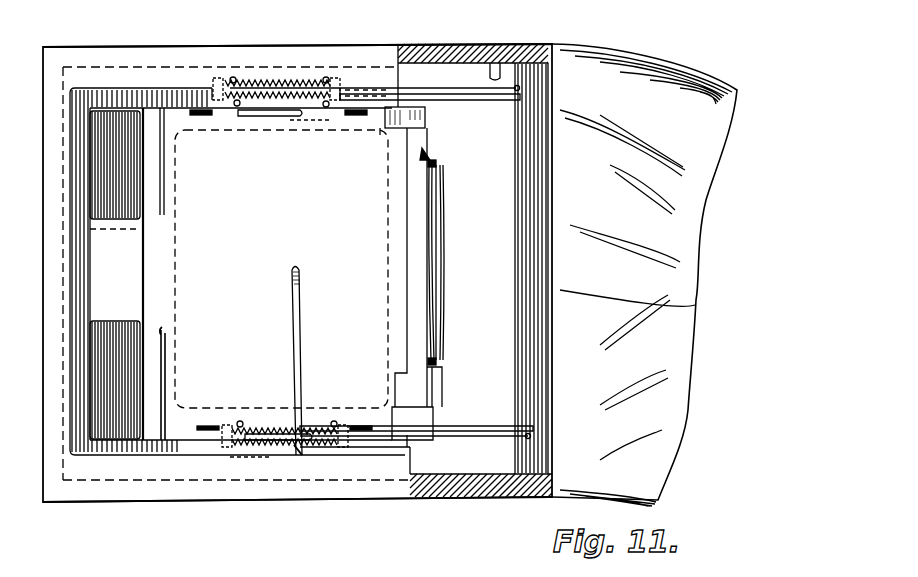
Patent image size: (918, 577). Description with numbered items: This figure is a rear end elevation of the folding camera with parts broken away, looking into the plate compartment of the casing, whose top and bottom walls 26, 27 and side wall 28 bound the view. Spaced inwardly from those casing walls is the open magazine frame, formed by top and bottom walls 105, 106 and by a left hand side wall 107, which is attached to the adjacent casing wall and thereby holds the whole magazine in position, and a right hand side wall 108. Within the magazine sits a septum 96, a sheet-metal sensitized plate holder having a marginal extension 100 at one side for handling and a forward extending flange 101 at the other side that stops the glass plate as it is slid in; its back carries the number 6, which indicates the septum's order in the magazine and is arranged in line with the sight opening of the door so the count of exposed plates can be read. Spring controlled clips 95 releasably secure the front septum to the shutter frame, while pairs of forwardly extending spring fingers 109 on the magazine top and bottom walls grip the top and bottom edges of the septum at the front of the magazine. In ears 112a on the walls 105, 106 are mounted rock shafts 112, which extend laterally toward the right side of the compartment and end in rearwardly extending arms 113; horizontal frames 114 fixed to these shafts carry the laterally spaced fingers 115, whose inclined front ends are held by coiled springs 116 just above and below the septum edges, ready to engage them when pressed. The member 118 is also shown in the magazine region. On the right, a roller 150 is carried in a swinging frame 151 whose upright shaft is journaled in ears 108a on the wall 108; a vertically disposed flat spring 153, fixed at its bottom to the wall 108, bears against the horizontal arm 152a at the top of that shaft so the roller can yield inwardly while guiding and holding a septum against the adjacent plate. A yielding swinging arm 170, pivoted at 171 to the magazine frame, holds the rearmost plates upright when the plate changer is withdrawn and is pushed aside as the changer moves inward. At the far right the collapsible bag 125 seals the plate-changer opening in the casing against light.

The number on septum 6 is at (210, 198).
The top wall 26 is at (113, 48).
The bottom wall 27 is at (297, 513).
The side wall 28 is at (37, 136).
The spring controlled clips 95 is at (283, 117).
The septum 96 is at (192, 404).
The marginal extension 100 is at (400, 349).
The forward extending flange 101 is at (150, 358).
The top wall of magazine frame 105 is at (470, 101).
The bottom wall of magazine frame 106 is at (499, 426).
The left hand side wall of magazine 107 is at (143, 216).
The right hand side wall of magazine 108 is at (435, 385).
The ears 108a is at (436, 165).
The spring fingers 109 is at (201, 116).
The rock shafts 112 is at (420, 92).
The ears 112a is at (215, 82).
The rearwardly extending arms 113 is at (520, 88).
The horizontal frames 114 is at (258, 82).
The fingers 115 is at (235, 78).
The coiled springs 116 is at (310, 123).
The movable member 118 is at (178, 301).
The collapsible bag 125 is at (657, 501).
The roller 150 is at (437, 224).
The swinging frame 151 is at (431, 190).
The horizontal arm 152a is at (429, 156).
The flat spring 153 is at (441, 266).
The yielding swinging arm 170 is at (298, 286).
The pivot 171 is at (300, 450).